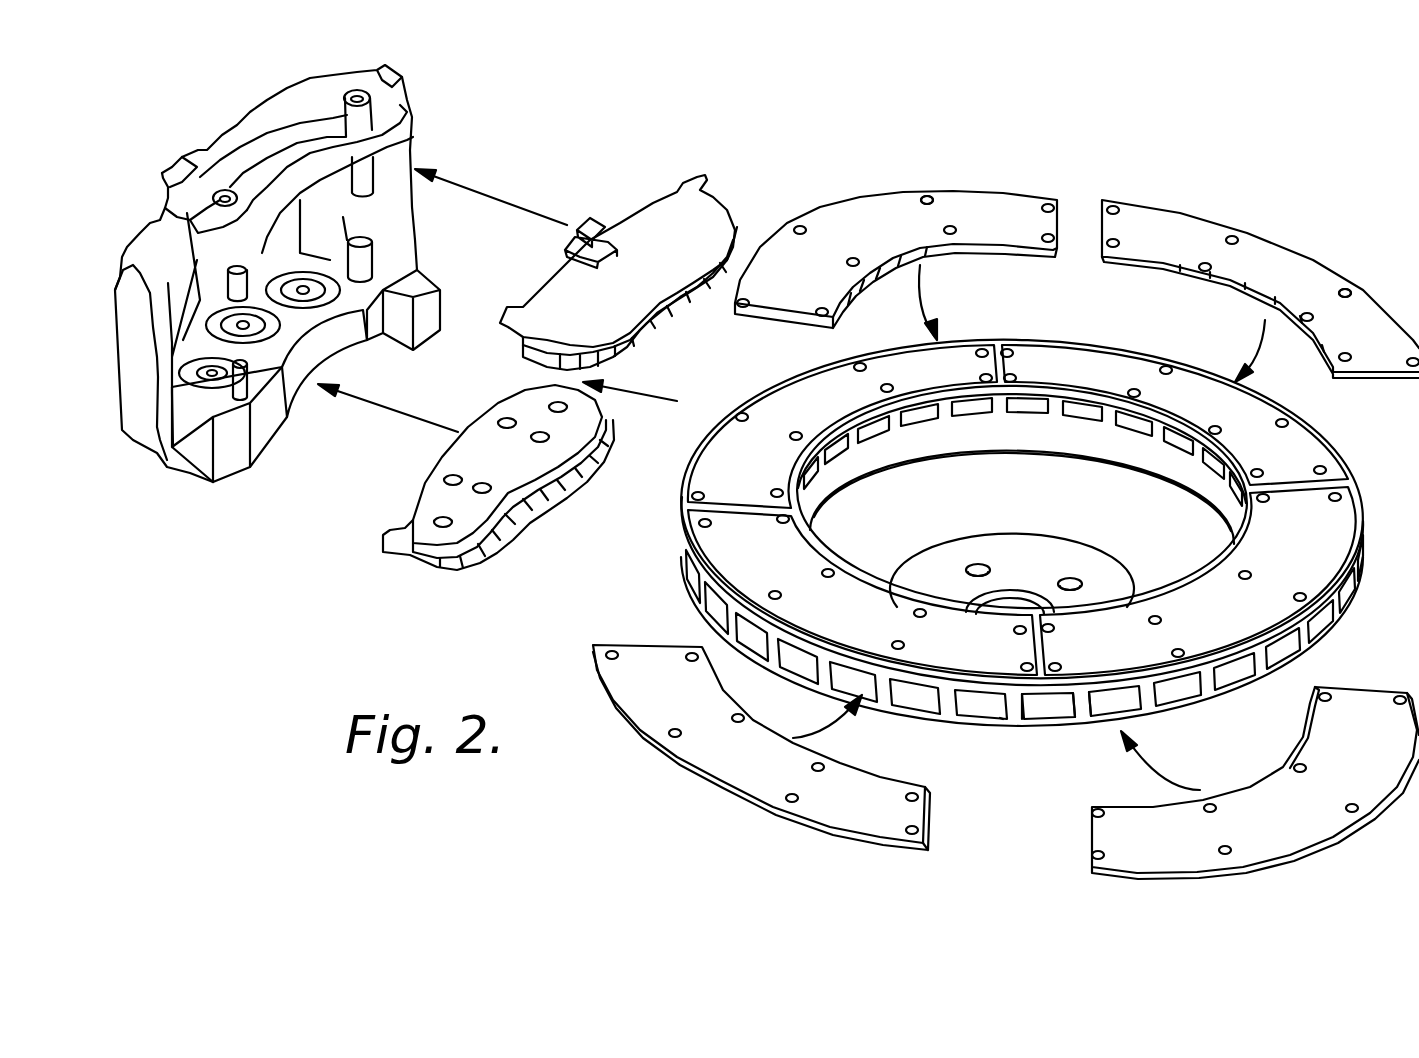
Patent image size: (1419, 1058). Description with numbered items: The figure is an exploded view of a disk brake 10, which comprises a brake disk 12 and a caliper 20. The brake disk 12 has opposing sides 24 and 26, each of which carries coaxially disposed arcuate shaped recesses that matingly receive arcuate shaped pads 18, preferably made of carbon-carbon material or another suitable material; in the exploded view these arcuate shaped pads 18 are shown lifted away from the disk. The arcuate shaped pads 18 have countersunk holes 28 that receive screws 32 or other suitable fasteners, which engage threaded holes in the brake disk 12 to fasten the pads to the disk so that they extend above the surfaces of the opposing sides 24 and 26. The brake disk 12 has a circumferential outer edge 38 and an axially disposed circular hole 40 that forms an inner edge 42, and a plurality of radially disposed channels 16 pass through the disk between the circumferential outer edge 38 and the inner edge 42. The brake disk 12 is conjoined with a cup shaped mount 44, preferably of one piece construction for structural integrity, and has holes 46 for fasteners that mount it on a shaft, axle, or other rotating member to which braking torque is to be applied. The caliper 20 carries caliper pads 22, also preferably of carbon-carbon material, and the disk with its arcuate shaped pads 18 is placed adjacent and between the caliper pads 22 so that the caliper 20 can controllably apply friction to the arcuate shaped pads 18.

The disk brake 10 is at (753, 133).
The brake disk 12 is at (683, 540).
The radially disposed channels 16 is at (1252, 512).
The arcuate shaped pads 18 is at (898, 213).
The caliper 20 is at (308, 102).
The caliper pads 22 is at (660, 227).
The opposing side 24 is at (997, 340).
The opposing side 26 is at (1063, 718).
The countersunk holes 28 is at (932, 198).
The screws 32 is at (1305, 598).
The circumferential outer edge 38 is at (1020, 715).
The axially disposed circular hole 40 is at (1050, 390).
The inner edge 42 is at (1105, 425).
The cup shaped mount 44 is at (1013, 553).
The holes 46 is at (1067, 583).